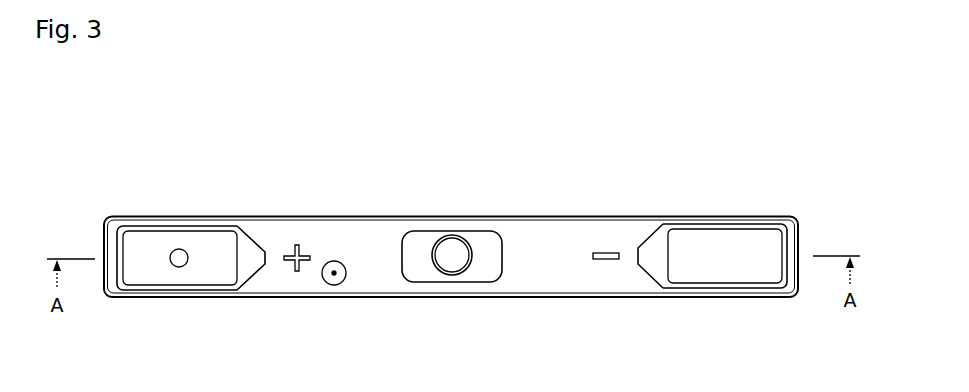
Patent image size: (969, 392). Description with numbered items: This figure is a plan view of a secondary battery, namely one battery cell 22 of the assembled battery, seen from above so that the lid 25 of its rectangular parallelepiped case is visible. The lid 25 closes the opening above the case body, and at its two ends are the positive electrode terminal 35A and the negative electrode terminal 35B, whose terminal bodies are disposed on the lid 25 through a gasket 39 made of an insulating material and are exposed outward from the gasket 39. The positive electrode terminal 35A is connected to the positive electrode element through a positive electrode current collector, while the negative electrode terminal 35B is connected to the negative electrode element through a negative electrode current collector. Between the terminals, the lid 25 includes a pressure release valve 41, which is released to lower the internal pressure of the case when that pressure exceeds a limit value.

The battery cell 22 is at (767, 183).
The lid 25 is at (380, 228).
The positive electrode terminal 35A is at (179, 237).
The negative electrode terminal 35B is at (714, 242).
The gasket 39 is at (252, 252).
The pressure release valve 41 is at (453, 250).